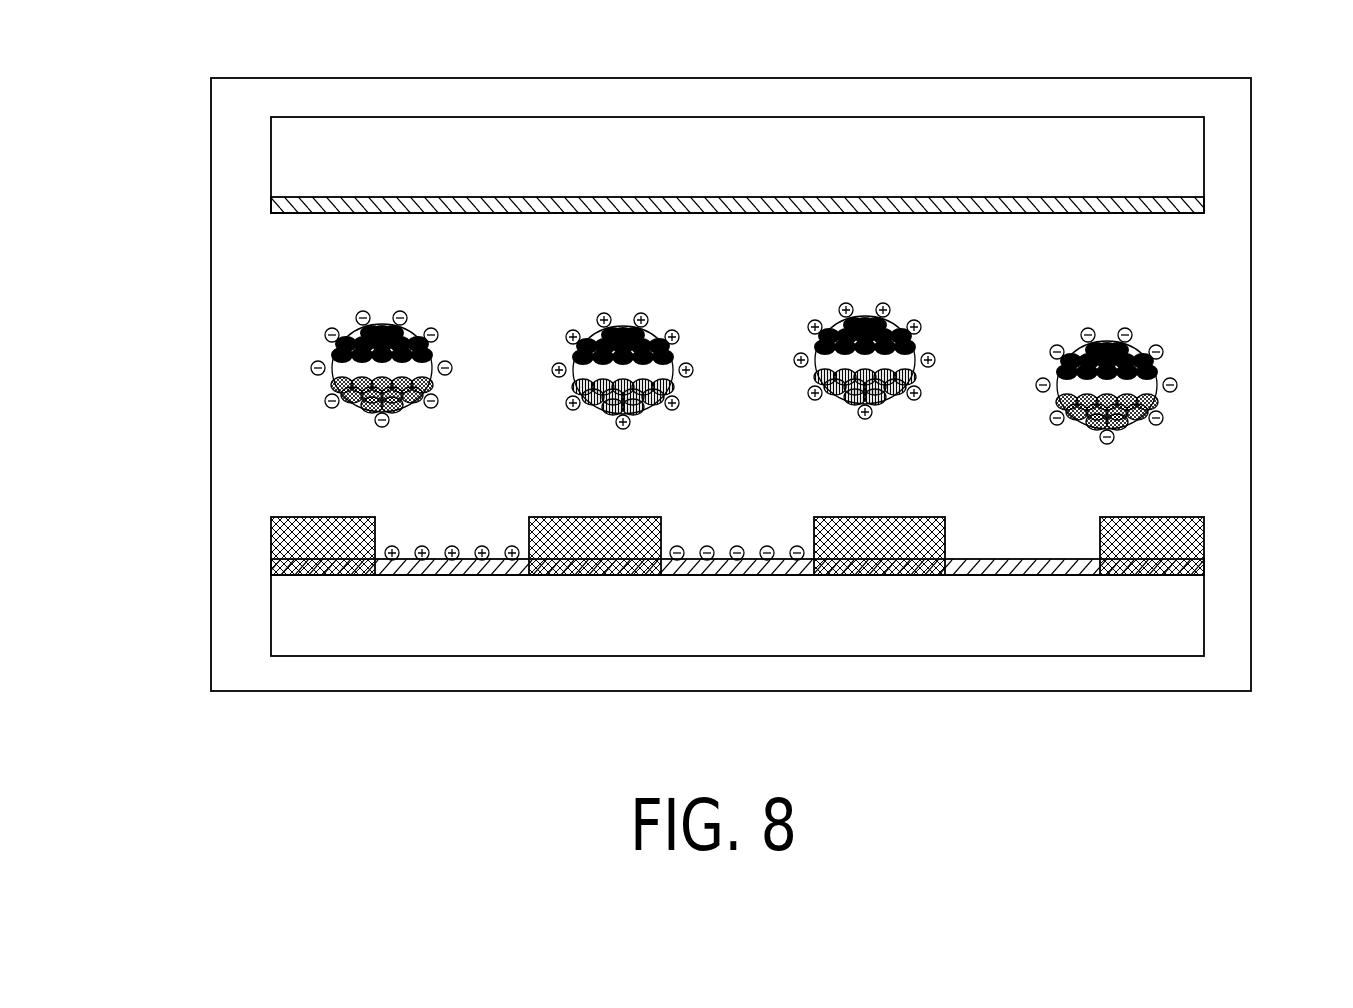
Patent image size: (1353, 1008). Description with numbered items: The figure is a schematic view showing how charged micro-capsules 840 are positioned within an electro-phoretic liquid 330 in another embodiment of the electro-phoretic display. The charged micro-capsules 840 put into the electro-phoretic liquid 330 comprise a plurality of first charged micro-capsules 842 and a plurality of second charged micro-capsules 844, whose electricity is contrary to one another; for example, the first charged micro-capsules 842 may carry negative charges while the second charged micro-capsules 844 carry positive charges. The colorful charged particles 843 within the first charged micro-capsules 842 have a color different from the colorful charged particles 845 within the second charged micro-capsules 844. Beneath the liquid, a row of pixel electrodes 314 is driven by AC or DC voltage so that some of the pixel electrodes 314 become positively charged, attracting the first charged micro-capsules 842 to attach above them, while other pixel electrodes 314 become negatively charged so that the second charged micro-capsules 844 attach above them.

The charged micro-capsules 840 is at (117, 225).
The first charged micro-capsules 842 is at (285, 395).
The second charged micro-capsules 844 is at (402, 399).
The colorful charged particles 843 is at (370, 406).
The colorful charged particles 845 is at (612, 409).
The electro-phoretic liquid 330 is at (1222, 432).
The pixel electrodes 314 is at (1085, 577).